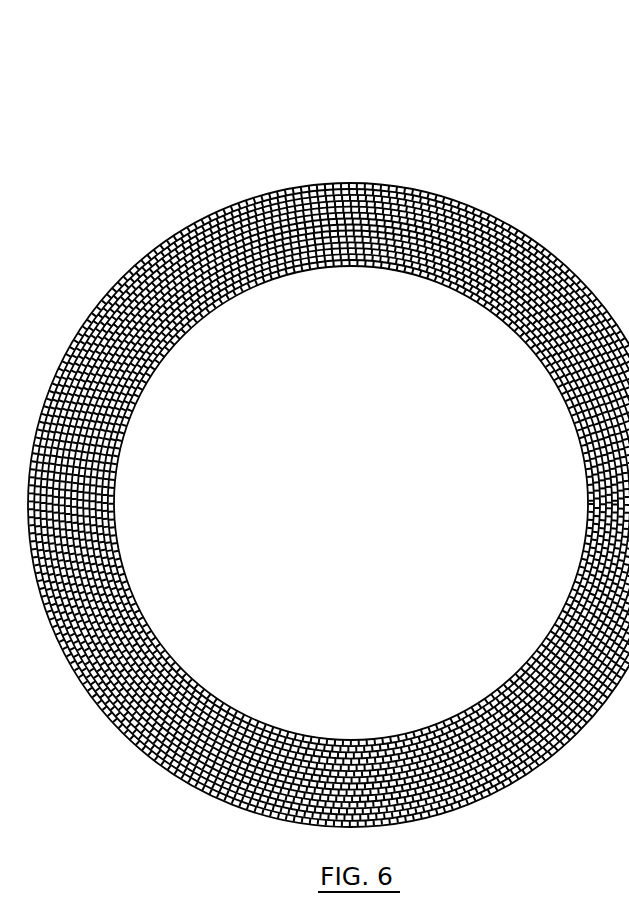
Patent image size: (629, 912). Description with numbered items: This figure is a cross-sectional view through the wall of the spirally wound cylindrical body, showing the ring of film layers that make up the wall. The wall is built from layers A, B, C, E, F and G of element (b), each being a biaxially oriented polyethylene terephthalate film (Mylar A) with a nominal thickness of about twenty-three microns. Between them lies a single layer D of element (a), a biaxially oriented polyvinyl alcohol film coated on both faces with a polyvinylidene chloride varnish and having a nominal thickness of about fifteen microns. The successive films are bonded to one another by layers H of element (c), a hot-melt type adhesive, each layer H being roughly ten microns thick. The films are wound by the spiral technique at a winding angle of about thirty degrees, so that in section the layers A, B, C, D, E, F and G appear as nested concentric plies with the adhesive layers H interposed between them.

The layer of element (b) A is at (487, 217).
The layer of element (b) B is at (493, 227).
The layer of element (b) C is at (505, 233).
The layer of element (a) D is at (518, 245).
The layer of element (b) E is at (525, 253).
The layer of element (b) F is at (535, 260).
The layer of element (b) G is at (548, 263).
The layers of element (c) H is at (196, 222).